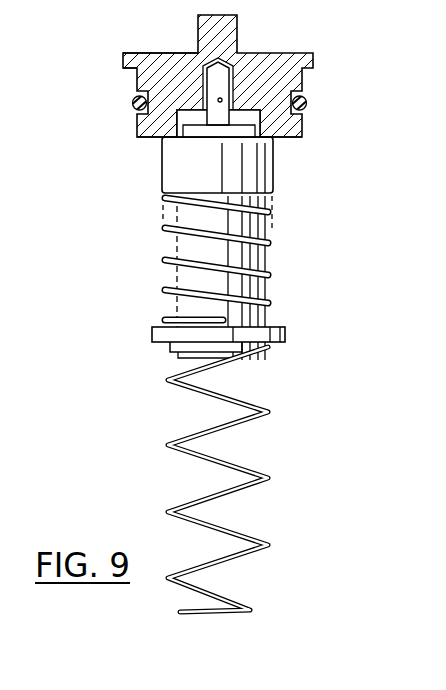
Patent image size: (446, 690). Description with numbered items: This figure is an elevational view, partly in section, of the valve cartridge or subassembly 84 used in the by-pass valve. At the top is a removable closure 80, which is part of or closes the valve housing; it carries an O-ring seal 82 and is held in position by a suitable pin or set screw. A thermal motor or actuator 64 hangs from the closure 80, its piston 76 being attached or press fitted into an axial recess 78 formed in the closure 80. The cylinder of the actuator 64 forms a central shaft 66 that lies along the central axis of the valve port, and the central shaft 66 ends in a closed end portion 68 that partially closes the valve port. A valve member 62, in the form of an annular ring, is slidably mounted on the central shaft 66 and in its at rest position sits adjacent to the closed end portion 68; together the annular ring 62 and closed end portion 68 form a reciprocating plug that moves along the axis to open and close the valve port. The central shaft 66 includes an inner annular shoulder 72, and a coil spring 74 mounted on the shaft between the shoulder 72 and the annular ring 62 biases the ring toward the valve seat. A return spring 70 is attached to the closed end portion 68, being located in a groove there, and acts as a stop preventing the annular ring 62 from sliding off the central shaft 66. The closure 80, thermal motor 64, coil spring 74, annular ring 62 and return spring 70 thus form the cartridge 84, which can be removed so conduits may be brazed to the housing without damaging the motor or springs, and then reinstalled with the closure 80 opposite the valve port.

The valve member 62 is at (287, 335).
The actuator 64 is at (162, 163).
The central shaft 66 is at (190, 278).
The closed end portion 68 is at (187, 350).
The return spring 70 is at (238, 465).
The inner annular shoulder 72 is at (276, 197).
The coil spring 74 is at (270, 273).
The piston 76 is at (236, 82).
The axial recess 78 is at (223, 97).
The removable closure 80 is at (178, 52).
The O-ring seal 82 is at (132, 98).
The cartridge or subassembly 84 is at (326, 51).